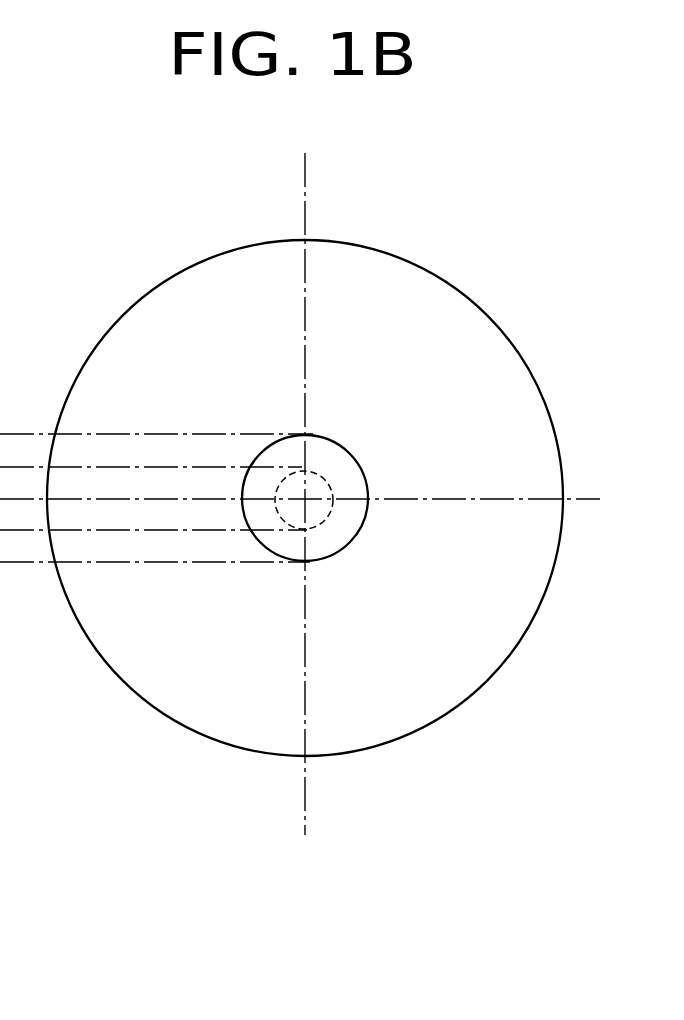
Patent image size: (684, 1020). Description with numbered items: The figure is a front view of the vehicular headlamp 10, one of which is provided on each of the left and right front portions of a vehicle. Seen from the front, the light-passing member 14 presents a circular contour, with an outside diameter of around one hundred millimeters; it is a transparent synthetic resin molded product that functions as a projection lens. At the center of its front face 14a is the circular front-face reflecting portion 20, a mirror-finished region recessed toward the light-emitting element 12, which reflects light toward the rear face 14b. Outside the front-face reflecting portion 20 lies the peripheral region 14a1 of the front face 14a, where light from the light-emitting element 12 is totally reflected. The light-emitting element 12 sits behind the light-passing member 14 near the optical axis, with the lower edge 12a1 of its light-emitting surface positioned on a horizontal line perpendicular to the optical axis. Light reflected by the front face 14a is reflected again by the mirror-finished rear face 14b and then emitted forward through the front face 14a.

The vehicular headlamp 10 is at (328, 885).
The light-emitting element 12 is at (328, 488).
The lower edge 12a1 is at (323, 518).
The light-passing member 14 is at (564, 554).
The front face 14a is at (413, 685).
The peripheral region 14a1 is at (380, 282).
The rear face 14b is at (442, 623).
The circular front-face reflecting portion 20 is at (338, 463).